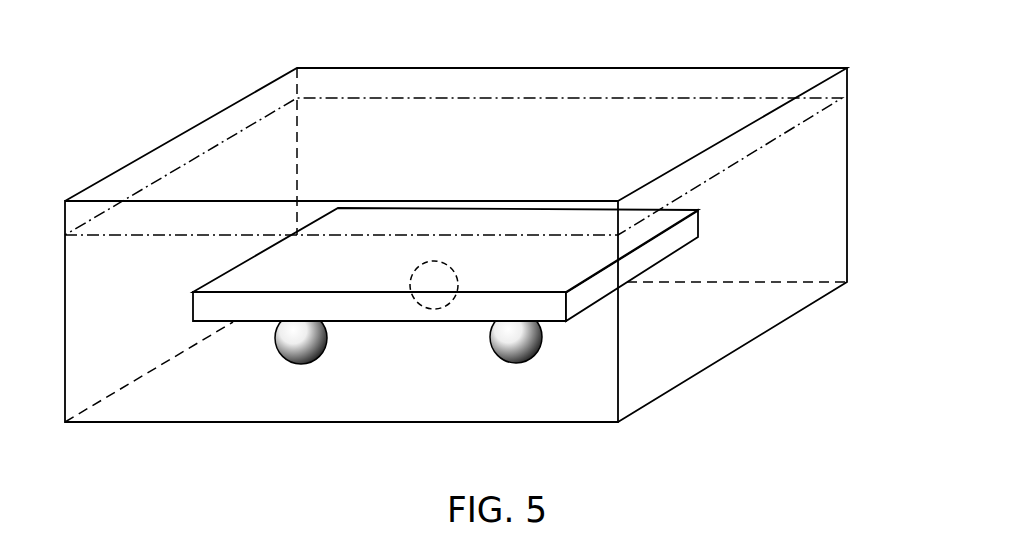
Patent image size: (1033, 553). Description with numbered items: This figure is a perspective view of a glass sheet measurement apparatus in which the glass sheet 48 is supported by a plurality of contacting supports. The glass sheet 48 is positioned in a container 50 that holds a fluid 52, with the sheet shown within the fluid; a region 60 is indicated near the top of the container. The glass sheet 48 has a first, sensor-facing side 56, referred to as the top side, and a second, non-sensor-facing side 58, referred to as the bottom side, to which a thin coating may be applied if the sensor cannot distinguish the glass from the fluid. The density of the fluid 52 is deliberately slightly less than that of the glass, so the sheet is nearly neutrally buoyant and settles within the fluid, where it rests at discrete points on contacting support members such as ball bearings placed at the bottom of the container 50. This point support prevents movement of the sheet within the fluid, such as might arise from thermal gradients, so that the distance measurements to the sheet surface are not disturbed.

The glass sheet 48 is at (710, 220).
The container 50 is at (187, 125).
The fluid 52 is at (157, 292).
The first side 56 is at (500, 278).
The second side 58 is at (242, 322).
The open top of tank 60 is at (527, 135).